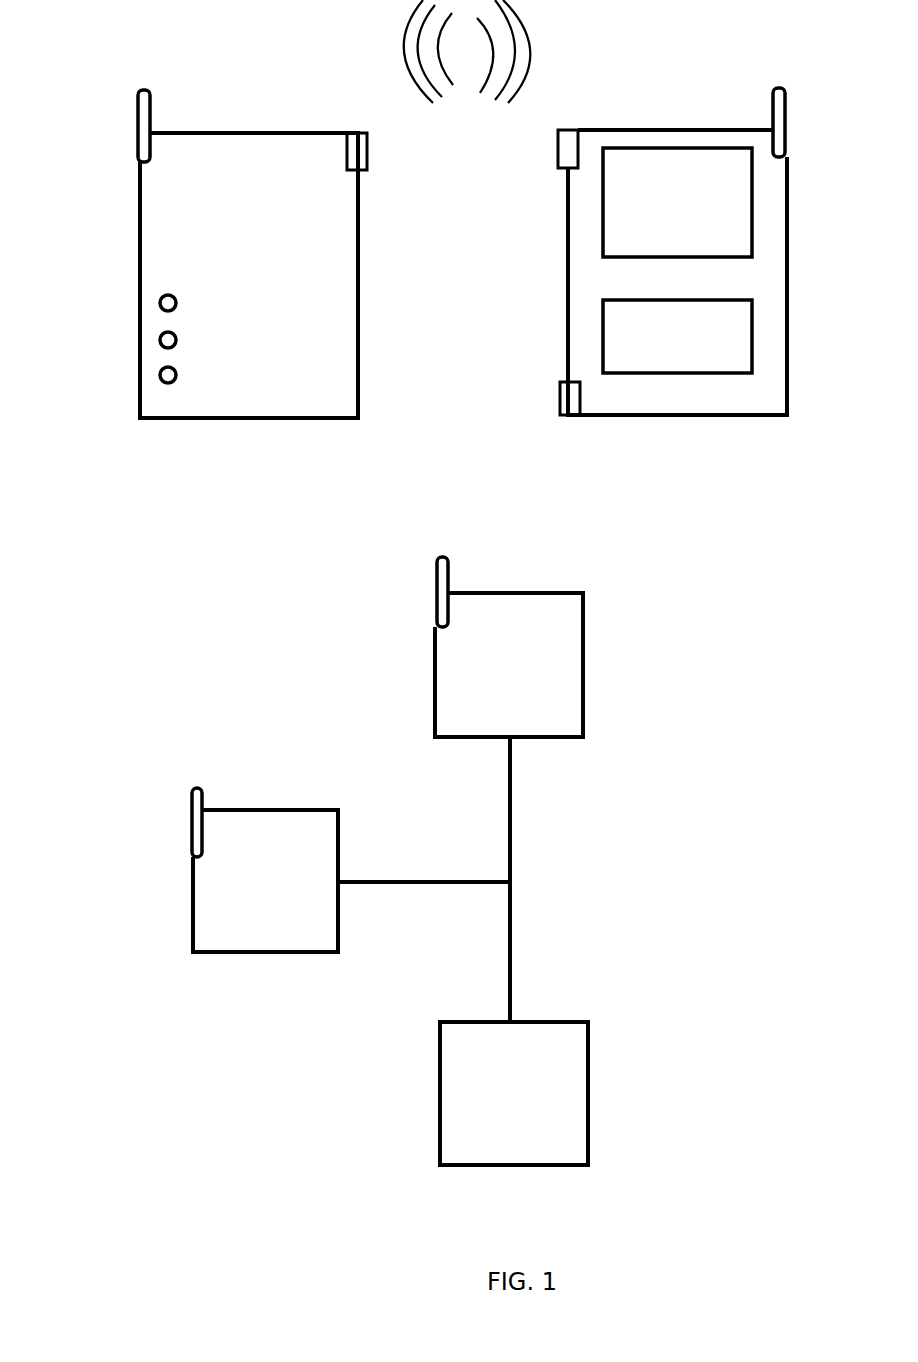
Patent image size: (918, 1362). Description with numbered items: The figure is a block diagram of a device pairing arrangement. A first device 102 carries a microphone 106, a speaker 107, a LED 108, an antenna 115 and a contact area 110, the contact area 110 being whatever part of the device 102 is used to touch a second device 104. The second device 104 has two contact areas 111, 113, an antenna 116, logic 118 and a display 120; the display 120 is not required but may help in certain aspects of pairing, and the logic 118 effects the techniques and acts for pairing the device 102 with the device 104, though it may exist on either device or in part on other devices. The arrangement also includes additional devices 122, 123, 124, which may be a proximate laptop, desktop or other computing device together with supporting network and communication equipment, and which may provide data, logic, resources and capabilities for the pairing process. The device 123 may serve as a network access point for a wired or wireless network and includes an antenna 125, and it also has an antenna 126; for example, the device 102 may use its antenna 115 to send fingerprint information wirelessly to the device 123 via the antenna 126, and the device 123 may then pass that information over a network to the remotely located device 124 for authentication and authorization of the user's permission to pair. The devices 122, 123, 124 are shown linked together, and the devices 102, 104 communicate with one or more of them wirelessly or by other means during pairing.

The device 102 is at (268, 420).
The second device 104 is at (690, 418).
The microphone 106 is at (158, 310).
The speaker 107 is at (158, 346).
The LED 108 is at (158, 382).
The contact area 110 is at (350, 130).
The contact area 111 is at (560, 128).
The contact area 113 is at (578, 418).
The antenna 115 is at (142, 88).
The antenna 116 is at (777, 86).
The logic 118 is at (677, 336).
The display 120 is at (677, 202).
The device 122 is at (585, 660).
The device 123 is at (285, 955).
The device 124 is at (525, 1168).
The antenna 125 is at (440, 555).
The antenna 126 is at (194, 786).